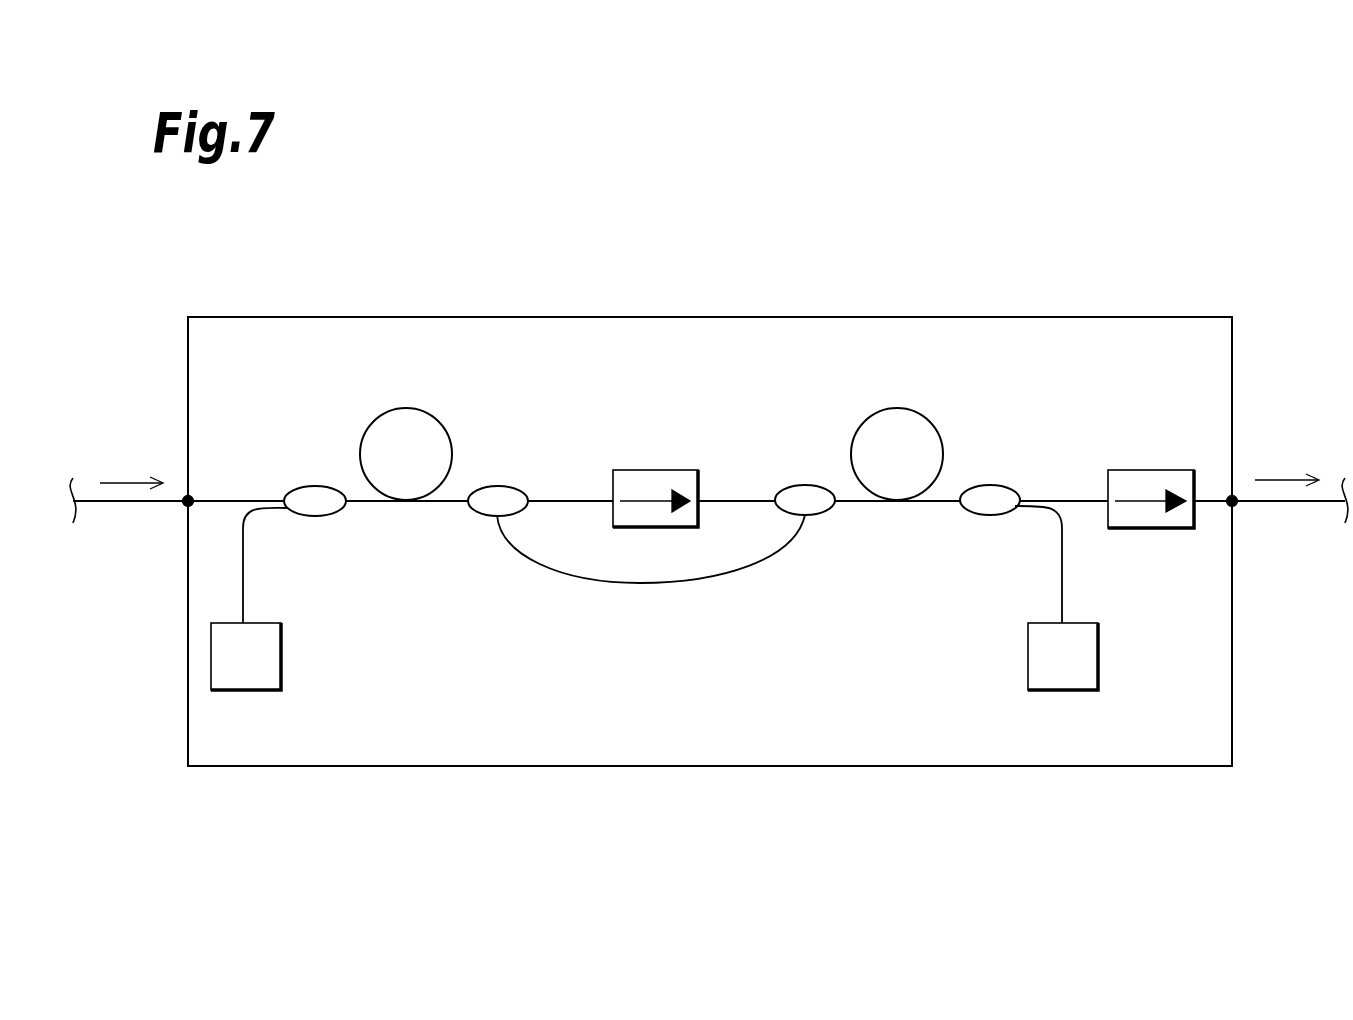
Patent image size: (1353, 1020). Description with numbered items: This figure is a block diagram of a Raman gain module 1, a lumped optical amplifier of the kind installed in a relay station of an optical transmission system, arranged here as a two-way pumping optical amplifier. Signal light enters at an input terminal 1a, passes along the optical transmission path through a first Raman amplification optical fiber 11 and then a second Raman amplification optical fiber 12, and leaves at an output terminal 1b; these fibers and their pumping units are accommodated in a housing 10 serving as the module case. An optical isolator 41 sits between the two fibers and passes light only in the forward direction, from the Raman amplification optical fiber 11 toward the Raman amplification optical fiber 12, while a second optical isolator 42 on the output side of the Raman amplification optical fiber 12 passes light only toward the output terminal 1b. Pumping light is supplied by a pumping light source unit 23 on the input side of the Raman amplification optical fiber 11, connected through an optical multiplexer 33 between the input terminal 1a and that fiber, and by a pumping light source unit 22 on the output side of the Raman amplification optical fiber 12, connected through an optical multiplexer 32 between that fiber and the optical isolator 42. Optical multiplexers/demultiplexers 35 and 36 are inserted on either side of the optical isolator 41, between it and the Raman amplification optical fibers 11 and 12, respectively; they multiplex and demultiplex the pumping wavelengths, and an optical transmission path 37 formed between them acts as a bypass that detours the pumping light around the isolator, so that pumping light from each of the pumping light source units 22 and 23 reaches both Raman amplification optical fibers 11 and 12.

The Raman gain module 1 is at (992, 303).
The input terminal 1a is at (178, 510).
The output terminal 1b is at (1237, 509).
The housing 10 is at (430, 317).
The Raman amplification optical fiber 11 is at (435, 410).
The Raman amplification optical fiber 12 is at (925, 410).
The pumping light source unit 22 is at (1099, 655).
The pumping light source unit 23 is at (282, 655).
The optical multiplexer 32 is at (995, 485).
The optical multiplexer 33 is at (300, 486).
The optical multiplexer/demultiplexer 35 is at (500, 486).
The optical multiplexer/demultiplexer 36 is at (795, 485).
The optical transmission path 37 is at (725, 580).
The optical isolator 41 is at (660, 470).
The optical isolator 42 is at (1153, 470).